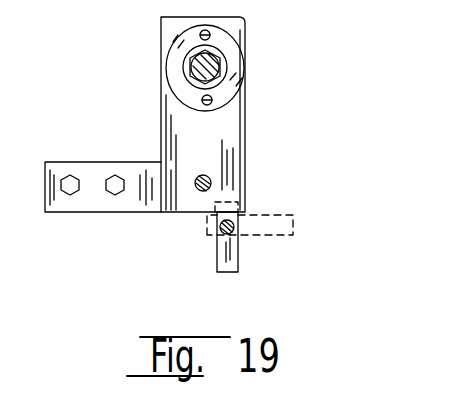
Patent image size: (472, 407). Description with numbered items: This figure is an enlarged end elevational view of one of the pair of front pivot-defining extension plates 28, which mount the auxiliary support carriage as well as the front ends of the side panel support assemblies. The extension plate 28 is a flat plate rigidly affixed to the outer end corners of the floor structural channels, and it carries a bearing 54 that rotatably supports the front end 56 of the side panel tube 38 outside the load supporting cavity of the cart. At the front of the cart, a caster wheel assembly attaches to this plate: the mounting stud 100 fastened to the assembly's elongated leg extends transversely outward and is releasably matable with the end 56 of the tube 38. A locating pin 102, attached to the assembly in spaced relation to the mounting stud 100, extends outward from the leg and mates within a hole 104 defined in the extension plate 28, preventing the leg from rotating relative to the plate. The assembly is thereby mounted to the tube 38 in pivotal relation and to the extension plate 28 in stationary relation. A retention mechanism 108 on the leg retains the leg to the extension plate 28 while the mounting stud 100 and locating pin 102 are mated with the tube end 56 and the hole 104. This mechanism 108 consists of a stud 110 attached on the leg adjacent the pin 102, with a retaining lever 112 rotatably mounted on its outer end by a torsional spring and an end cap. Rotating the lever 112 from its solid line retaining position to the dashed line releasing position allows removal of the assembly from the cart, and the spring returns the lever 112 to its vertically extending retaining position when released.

The extension plate 28 is at (248, 128).
The side panel tube 38 is at (228, 62).
The bearing 54 is at (225, 42).
The front end of tube 56 is at (220, 78).
The mounting stud 100 is at (190, 80).
The locating pin 102 is at (197, 190).
The hole 104 is at (203, 176).
The retention mechanism 108 is at (200, 242).
The stud 110 is at (231, 234).
The retaining lever 112 is at (267, 208).